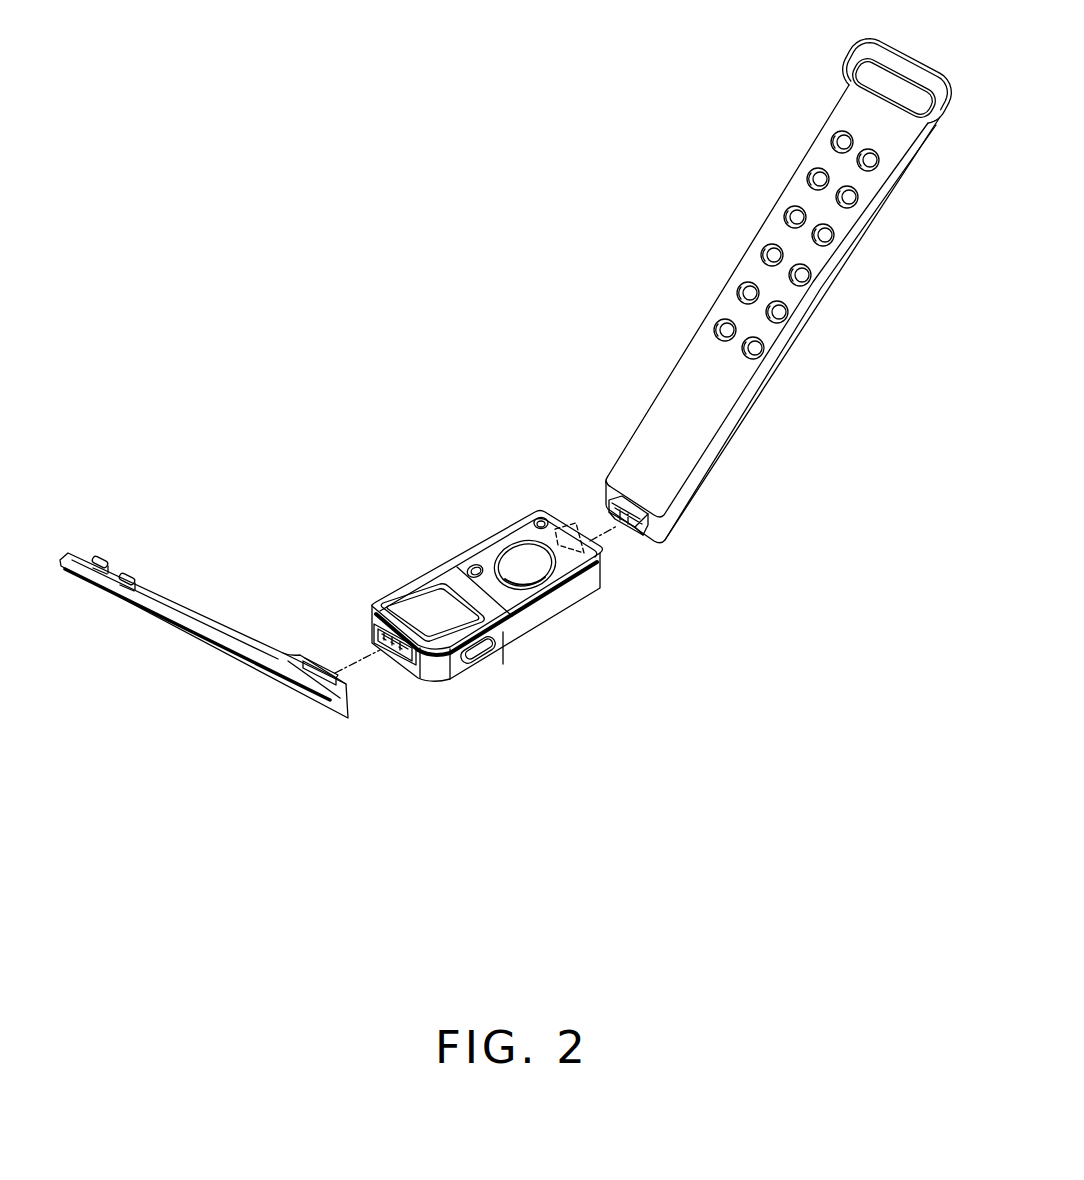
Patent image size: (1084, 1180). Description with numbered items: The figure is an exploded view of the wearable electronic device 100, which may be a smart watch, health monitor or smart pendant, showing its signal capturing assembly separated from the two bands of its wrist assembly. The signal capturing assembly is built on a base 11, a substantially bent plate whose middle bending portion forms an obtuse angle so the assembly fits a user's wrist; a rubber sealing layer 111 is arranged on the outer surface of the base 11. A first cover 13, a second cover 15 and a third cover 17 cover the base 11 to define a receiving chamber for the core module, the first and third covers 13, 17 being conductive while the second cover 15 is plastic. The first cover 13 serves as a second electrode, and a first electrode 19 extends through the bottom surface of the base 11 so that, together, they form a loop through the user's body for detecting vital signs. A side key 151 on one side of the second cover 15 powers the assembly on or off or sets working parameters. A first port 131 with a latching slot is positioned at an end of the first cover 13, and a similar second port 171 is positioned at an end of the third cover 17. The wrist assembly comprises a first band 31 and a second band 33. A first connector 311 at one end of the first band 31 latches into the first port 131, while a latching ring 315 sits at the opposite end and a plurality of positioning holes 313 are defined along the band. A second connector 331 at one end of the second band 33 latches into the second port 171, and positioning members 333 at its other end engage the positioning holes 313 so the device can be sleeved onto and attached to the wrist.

The wearable electronic device 100 is at (390, 80).
The base 11 is at (540, 614).
The sealing layer 111 is at (486, 562).
The first cover 13 is at (578, 594).
The first port 131 is at (576, 526).
The second cover 15 is at (498, 656).
The side key 151 is at (477, 656).
The third cover 17 is at (433, 672).
The second port 171 is at (368, 632).
The first electrode 19 is at (522, 550).
The first band 31 is at (690, 320).
The first connector 311 is at (624, 542).
The positioning holes 313 is at (763, 250).
The latching ring 315 is at (846, 70).
The second band 33 is at (190, 599).
The second connector 331 is at (352, 690).
The positioning members 333 is at (110, 562).